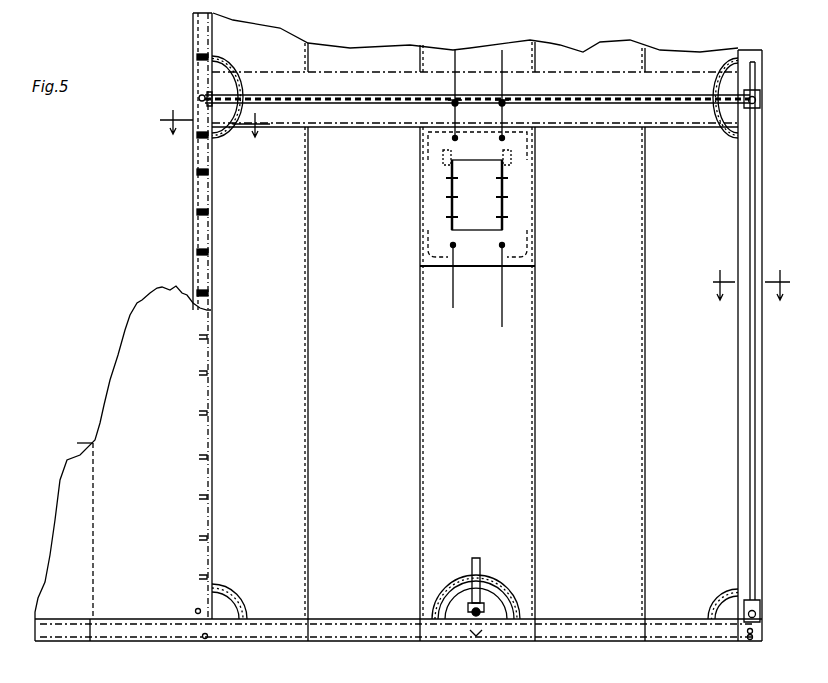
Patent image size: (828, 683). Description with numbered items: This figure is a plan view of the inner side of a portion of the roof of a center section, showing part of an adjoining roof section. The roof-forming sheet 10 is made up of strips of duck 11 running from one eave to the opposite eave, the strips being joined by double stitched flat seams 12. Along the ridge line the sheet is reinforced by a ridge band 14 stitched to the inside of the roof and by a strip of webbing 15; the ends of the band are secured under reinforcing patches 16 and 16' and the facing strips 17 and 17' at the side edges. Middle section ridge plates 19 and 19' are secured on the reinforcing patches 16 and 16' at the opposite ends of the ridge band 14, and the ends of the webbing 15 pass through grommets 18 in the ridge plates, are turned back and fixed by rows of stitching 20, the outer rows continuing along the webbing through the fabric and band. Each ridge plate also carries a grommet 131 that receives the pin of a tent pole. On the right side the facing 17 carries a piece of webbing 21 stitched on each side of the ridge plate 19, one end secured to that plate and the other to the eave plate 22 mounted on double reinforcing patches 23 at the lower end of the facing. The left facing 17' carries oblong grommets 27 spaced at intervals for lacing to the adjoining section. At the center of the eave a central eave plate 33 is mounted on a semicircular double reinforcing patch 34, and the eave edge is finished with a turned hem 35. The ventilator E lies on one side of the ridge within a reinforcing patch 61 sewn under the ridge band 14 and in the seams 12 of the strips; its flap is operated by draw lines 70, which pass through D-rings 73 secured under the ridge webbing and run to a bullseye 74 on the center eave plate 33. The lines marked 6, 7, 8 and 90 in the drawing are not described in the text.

The roof-forming sheet 10 is at (368, 643).
The strips of duck 11 is at (325, 452).
The double stitched flat seam 12 is at (537, 310).
The grommet 131 is at (200, 97).
The ridge band 14 is at (593, 117).
The strip of webbing 15 is at (628, 97).
The reinforcing patch 16 is at (718, 113).
The reinforcing patch 16' is at (249, 153).
The facing 17 is at (767, 345).
The facing strip 17' is at (226, 175).
The grommets 18 is at (210, 90).
The middle section ridge plate 19 is at (770, 98).
The ridge plate 19' is at (238, 176).
The rows of stitching 20 is at (715, 123).
The webbing 21 is at (205, 440).
The eave plate 22 is at (757, 617).
The double reinforcing patches 23 is at (723, 602).
The oblong grommets 27 is at (200, 215).
The central eave plate 33 is at (470, 620).
The double reinforcing patch 34 is at (455, 582).
The hem 35 is at (587, 628).
The reinforcing patch 61 is at (435, 210).
The draw lines 70 is at (507, 85).
The D-rings 73 is at (508, 107).
The bullseye 74 is at (483, 608).
The rod 90 is at (500, 297).
The ventilator E is at (525, 208).
The section line 6 is at (209, 128).
The section line 7 is at (757, 403).
The section line 8 is at (749, 285).